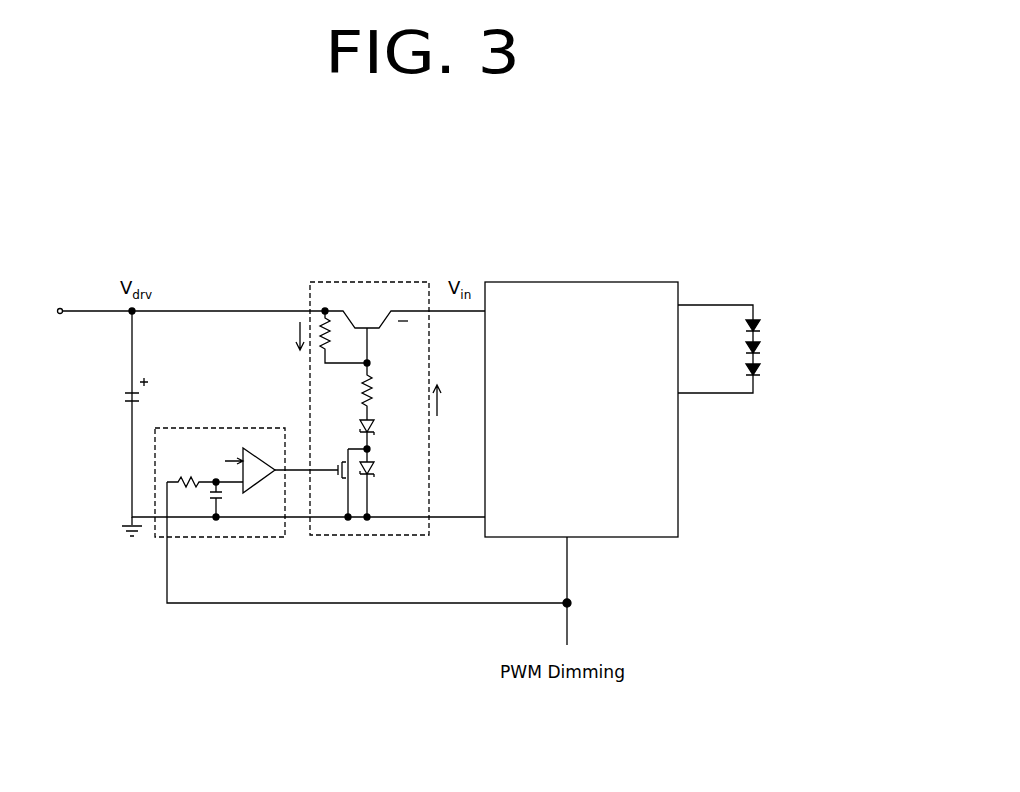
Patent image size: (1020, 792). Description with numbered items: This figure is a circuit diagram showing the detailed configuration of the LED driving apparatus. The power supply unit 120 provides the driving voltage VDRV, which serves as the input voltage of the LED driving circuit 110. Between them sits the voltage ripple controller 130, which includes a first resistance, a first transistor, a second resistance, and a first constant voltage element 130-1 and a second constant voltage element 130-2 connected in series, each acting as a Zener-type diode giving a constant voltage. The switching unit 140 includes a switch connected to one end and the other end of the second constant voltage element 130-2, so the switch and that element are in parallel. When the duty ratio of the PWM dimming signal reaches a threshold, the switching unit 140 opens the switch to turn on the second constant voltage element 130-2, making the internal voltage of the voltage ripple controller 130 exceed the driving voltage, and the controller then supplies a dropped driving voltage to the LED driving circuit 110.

The LED driving circuit 110 is at (668, 282).
The power supply unit 120 is at (128, 300).
The voltage ripple controller 130 is at (331, 408).
The first constant voltage element 130-1 is at (362, 422).
The second constant voltage element 130-2 is at (358, 462).
The switching unit 140 is at (162, 542).